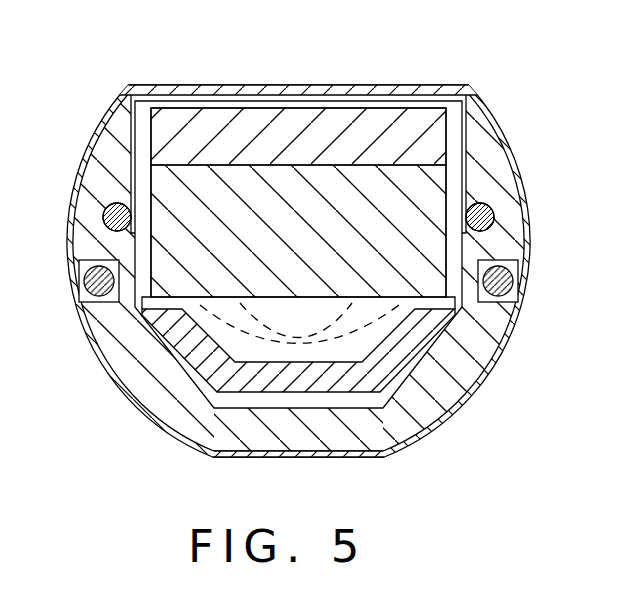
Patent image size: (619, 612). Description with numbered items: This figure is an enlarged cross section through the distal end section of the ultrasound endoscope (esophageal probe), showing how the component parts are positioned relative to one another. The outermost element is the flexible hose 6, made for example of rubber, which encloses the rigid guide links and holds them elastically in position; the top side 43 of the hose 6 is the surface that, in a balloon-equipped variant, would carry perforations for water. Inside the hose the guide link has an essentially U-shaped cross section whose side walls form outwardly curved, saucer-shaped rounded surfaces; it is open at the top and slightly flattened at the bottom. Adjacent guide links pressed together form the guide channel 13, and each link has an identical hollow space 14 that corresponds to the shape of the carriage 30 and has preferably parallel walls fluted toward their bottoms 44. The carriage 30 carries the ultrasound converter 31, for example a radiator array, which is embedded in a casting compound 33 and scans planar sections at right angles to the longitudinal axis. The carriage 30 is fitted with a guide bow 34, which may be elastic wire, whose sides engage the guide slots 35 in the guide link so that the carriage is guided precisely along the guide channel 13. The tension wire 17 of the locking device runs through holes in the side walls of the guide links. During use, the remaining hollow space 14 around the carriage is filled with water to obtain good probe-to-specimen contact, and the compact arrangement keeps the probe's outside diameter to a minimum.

The flexible hose 6 is at (402, 85).
The guide channel 13 is at (433, 340).
The hollow space 14 is at (205, 384).
The tension wire 17 is at (88, 297).
The carriage 30 is at (450, 118).
The ultrasound converter 31 is at (252, 125).
The casting compound 33 is at (422, 193).
The guide bow 34 is at (112, 212).
The guide slots 35 is at (113, 208).
The top side of hose 43 is at (335, 86).
The bottoms 44 is at (328, 457).